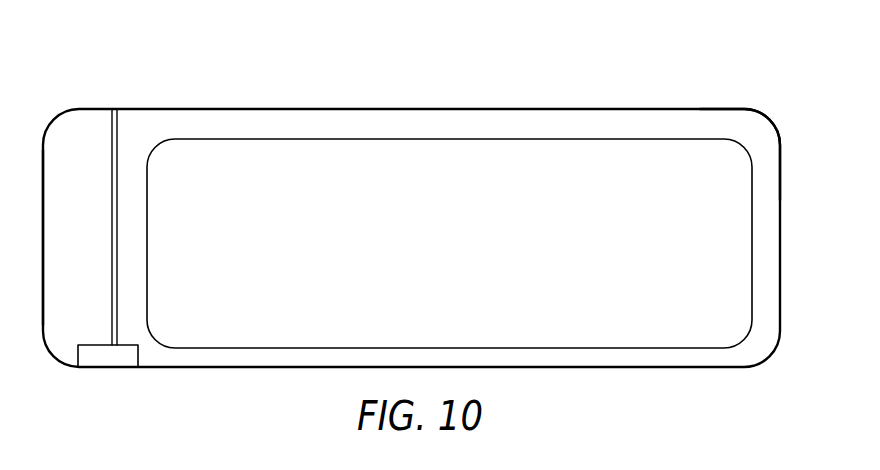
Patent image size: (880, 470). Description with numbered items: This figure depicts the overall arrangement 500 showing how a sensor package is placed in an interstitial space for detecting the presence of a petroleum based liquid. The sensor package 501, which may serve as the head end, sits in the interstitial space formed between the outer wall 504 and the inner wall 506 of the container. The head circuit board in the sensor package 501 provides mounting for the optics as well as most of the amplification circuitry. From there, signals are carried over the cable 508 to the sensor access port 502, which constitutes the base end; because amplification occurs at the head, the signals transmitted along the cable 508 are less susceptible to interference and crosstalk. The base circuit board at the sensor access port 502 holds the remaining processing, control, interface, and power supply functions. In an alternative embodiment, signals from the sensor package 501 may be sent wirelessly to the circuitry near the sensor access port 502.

The battery pack 500 is at (608, 42).
The sensor package 501 is at (78, 357).
The sensor access port 502 is at (112, 109).
The outer wall 504 is at (724, 110).
The inner wall 506 is at (752, 320).
The cable 508 is at (112, 176).